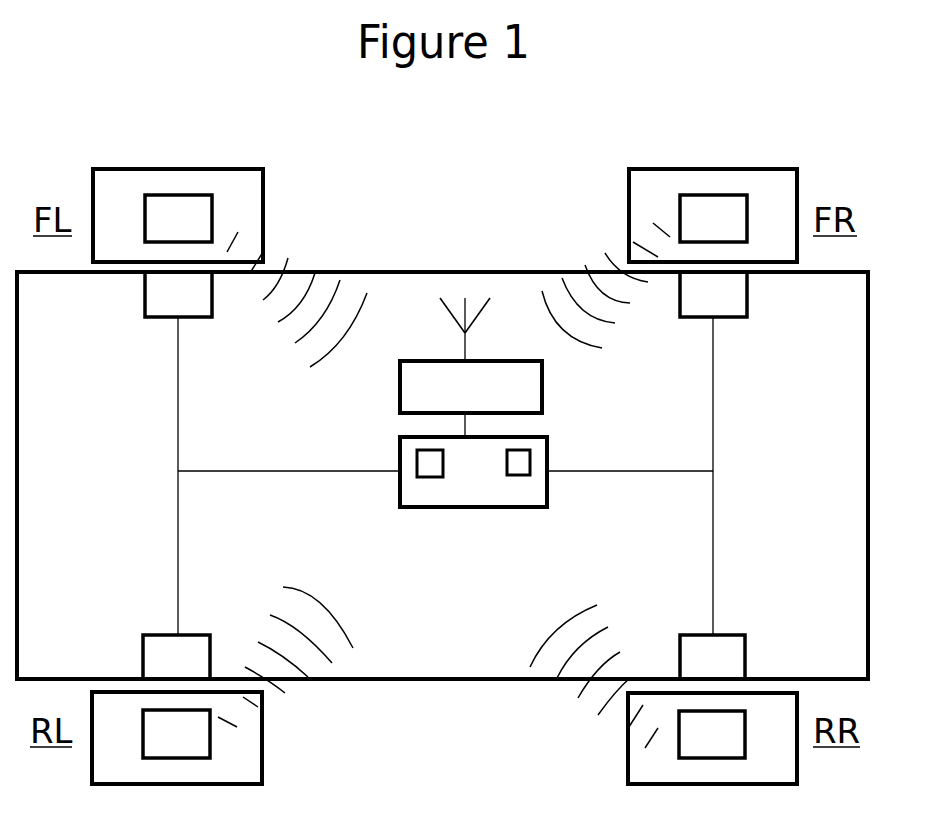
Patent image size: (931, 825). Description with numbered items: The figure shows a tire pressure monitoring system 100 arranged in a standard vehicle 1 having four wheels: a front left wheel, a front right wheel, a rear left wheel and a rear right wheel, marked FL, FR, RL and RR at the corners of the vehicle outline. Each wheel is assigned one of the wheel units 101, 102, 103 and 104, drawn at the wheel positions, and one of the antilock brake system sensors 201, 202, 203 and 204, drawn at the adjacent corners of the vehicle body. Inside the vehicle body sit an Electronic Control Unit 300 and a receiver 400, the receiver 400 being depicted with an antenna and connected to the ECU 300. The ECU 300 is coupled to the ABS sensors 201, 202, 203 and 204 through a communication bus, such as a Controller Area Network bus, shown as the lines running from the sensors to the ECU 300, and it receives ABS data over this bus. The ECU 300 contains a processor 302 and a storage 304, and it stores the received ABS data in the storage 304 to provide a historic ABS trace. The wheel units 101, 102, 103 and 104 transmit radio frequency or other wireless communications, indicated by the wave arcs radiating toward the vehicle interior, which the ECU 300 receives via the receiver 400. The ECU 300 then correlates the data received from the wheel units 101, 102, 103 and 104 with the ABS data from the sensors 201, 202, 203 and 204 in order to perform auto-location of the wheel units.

The vehicle 1 is at (845, 467).
The tire pressure monitoring system 100 is at (473, 209).
The wheel unit 101 is at (256, 281).
The wheel unit 102 is at (644, 271).
The wheel unit 103 is at (637, 681).
The wheel unit 104 is at (248, 672).
The antilock brake system sensor 201 is at (178, 294).
The antilock brake system sensor 202 is at (713, 294).
The antilock brake system sensor 203 is at (712, 657).
The antilock brake system sensor 204 is at (176, 657).
The Electronic Control Unit 300 is at (481, 515).
The processor 302 is at (417, 477).
The storage 304 is at (530, 474).
The receiver 400 is at (471, 355).